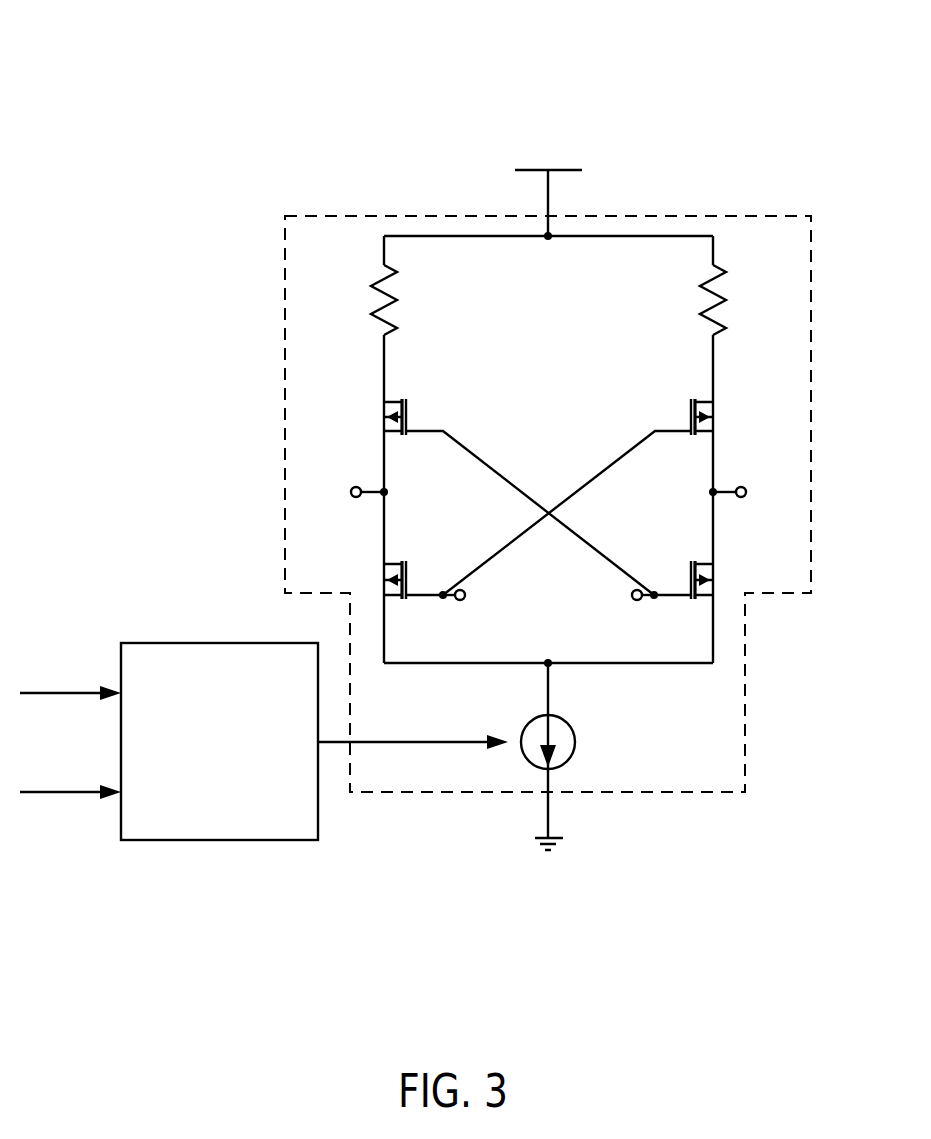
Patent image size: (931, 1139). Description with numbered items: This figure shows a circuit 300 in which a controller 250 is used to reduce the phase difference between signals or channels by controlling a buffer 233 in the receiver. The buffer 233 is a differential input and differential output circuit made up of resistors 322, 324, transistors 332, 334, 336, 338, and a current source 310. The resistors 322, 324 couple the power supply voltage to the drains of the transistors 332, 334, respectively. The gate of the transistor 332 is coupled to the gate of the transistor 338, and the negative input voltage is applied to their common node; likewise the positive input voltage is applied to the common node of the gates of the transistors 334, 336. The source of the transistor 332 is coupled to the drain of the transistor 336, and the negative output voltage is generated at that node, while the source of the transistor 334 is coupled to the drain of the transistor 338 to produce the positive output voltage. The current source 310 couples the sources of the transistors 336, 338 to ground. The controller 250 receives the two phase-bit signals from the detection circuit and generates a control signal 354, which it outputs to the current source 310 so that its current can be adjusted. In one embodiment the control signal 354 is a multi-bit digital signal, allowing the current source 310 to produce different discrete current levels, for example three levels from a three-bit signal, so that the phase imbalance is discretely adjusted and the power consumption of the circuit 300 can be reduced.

The circuit 300 is at (180, 107).
The buffer 233 is at (745, 216).
The resistor 322 is at (397, 284).
The resistor 324 is at (727, 284).
The transistor 332 is at (418, 412).
The transistor 334 is at (728, 412).
The transistor 336 is at (418, 575).
The transistor 338 is at (728, 575).
The current source 310 is at (566, 722).
The controller 250 is at (270, 643).
The control signal 354 is at (374, 742).